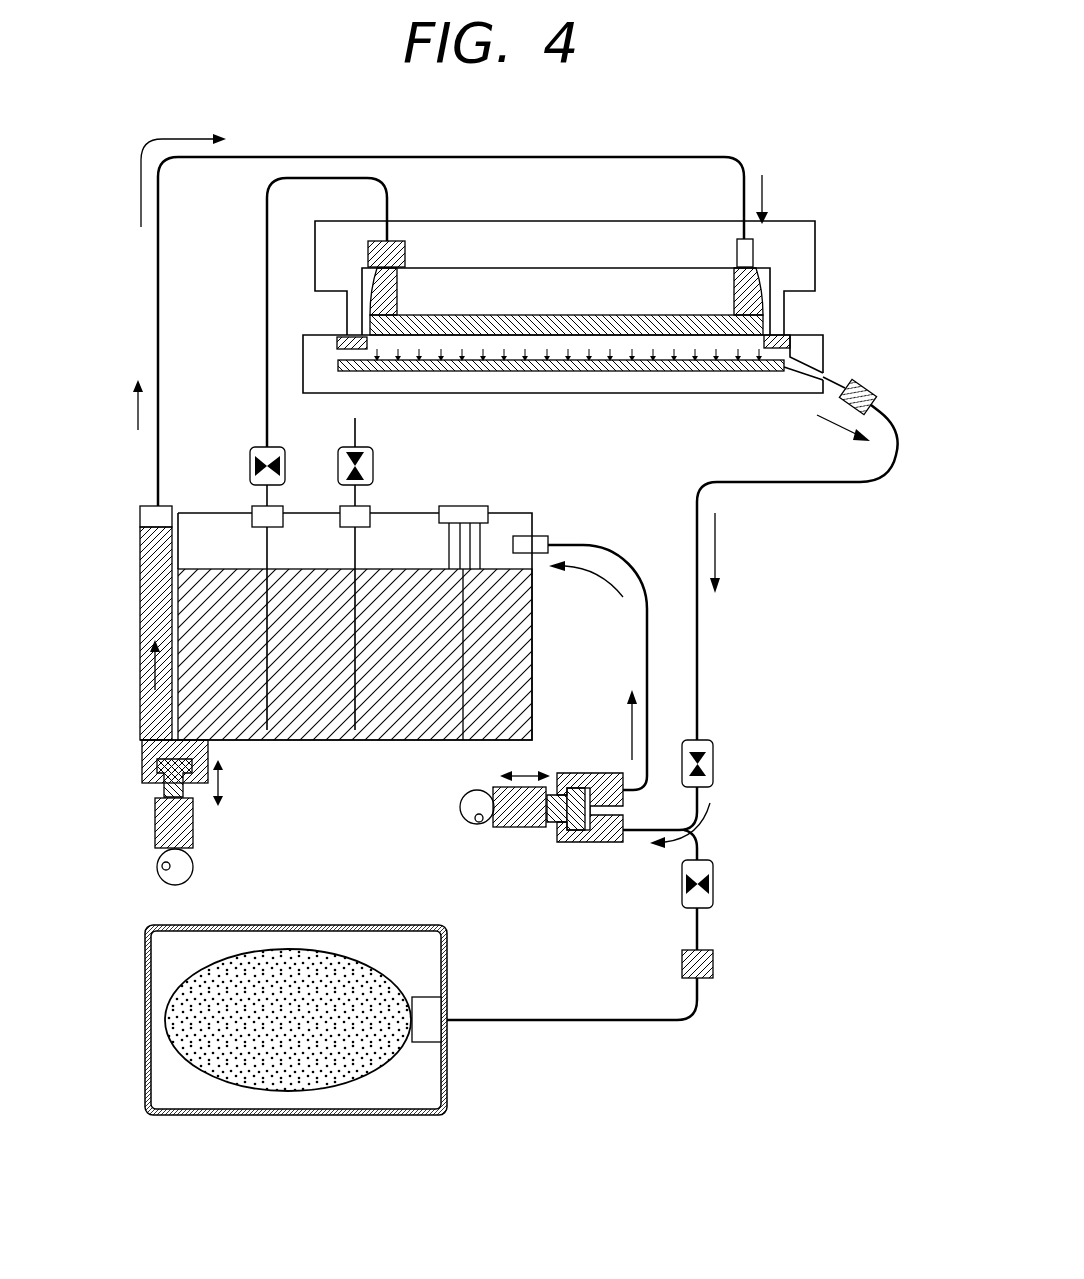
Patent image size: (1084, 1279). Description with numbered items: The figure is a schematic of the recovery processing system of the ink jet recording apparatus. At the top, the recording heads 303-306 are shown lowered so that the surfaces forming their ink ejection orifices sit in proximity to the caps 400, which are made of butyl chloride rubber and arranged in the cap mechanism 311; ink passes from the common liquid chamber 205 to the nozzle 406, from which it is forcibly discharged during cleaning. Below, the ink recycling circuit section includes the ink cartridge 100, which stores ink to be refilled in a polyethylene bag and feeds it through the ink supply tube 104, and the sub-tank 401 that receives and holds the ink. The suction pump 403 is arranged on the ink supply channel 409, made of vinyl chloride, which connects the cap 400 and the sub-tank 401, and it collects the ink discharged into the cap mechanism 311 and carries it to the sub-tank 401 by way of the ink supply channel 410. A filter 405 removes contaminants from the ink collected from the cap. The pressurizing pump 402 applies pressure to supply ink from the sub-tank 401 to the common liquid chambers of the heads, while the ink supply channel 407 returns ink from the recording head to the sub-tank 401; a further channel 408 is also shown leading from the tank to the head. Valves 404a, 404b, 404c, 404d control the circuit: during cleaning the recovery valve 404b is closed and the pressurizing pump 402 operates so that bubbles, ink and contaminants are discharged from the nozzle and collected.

The ink cartridge 100 is at (177, 1092).
The ink supply tube 104 is at (572, 1021).
The common liquid chamber 205 is at (503, 316).
The recording heads 303-306 is at (787, 225).
The cap mechanism 311 is at (815, 345).
The cap 400 is at (338, 340).
The sub-tank 401 is at (345, 720).
The pressurizing pump 402 is at (142, 770).
The suction pump 403 is at (593, 842).
The valve 404a is at (713, 880).
The recovery valve 404b is at (250, 474).
The valve 404c is at (373, 457).
The valve 404d is at (713, 762).
The filter 405 is at (404, 243).
The nozzle 406 is at (578, 372).
The ink supply channel 407 is at (267, 388).
The tube 408 is at (158, 320).
The ink supply channel 409 is at (805, 482).
The ink supply channel 410 is at (583, 545).